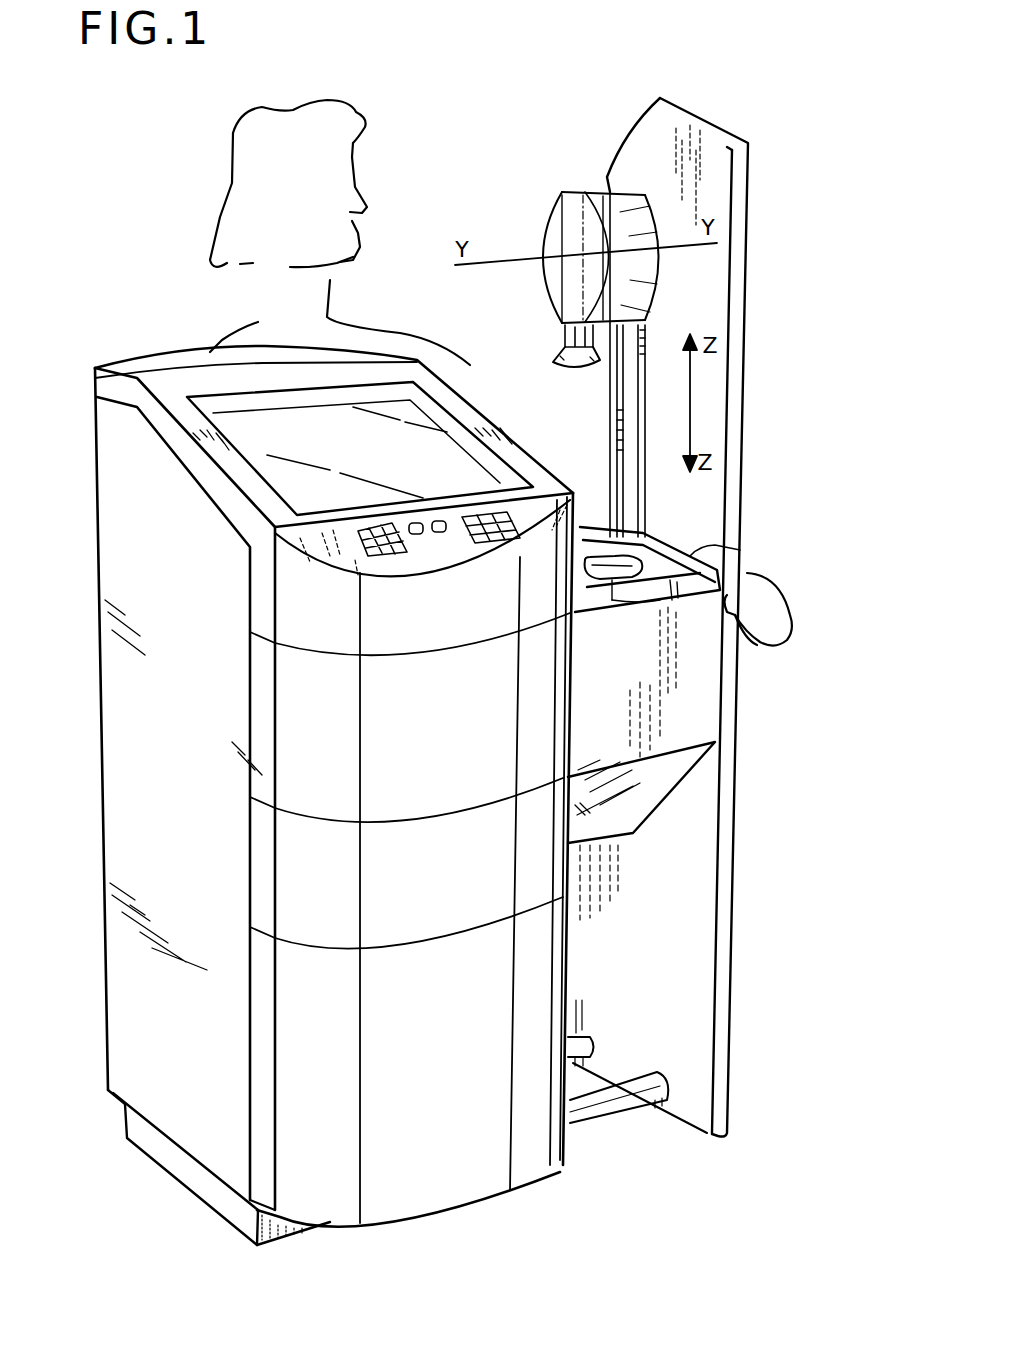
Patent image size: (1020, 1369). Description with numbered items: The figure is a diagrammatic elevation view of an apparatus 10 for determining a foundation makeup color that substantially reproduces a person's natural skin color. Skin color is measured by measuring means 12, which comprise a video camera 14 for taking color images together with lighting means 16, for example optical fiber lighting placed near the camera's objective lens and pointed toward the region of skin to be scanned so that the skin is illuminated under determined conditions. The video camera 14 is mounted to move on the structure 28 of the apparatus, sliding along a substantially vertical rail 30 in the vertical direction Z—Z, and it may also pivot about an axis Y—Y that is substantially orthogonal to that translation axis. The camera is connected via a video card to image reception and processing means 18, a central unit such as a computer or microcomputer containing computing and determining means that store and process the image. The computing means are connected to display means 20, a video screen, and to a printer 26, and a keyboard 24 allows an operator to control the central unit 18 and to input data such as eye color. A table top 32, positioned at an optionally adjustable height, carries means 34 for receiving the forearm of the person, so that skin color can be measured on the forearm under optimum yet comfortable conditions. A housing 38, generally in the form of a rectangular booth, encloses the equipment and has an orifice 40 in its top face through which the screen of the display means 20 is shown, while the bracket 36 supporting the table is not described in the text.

The apparatus 10 is at (751, 226).
The means for measuring skin color 12 is at (566, 186).
The video camera 14 is at (587, 277).
The lighting means 16 is at (563, 355).
The image reception and processing means 18 is at (368, 770).
The display means 20 is at (308, 428).
The keyboard 24 is at (392, 543).
The printer 26 is at (427, 1187).
The structure 28 is at (683, 725).
The rail 30 is at (638, 480).
The table top 32 is at (625, 595).
The means for receiving the forearm 34 is at (612, 578).
The arm rest 36 is at (690, 556).
The housing 38 is at (207, 1118).
The orifice 40 is at (218, 435).